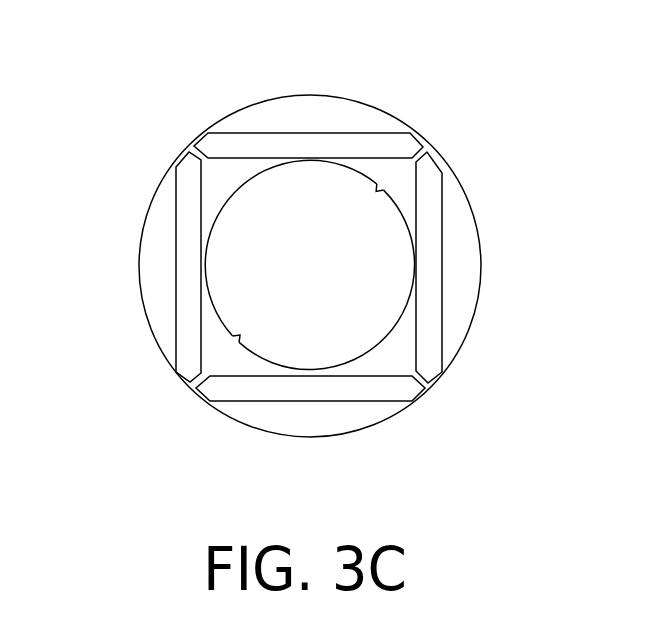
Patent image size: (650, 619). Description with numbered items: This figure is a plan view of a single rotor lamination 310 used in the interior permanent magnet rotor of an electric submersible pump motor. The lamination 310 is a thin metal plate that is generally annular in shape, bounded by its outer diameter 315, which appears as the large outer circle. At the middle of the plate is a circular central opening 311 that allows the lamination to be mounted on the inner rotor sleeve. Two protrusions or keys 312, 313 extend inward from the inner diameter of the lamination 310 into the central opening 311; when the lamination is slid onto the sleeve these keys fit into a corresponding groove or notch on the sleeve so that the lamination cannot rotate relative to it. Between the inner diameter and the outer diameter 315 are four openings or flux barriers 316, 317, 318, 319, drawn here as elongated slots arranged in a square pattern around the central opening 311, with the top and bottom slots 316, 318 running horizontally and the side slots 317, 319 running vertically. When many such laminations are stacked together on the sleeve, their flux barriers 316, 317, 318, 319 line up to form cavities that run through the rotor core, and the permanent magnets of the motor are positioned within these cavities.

The rotor lamination 310 is at (174, 128).
The circular central opening 311 is at (320, 281).
The protrusion or key 312 is at (376, 192).
The protrusion or key 313 is at (242, 340).
The outer diameter 315 is at (467, 267).
The opening or flux barrier 316 is at (362, 142).
The opening or flux barrier 317 is at (188, 228).
The opening or flux barrier 318 is at (240, 392).
The opening or flux barrier 319 is at (430, 228).